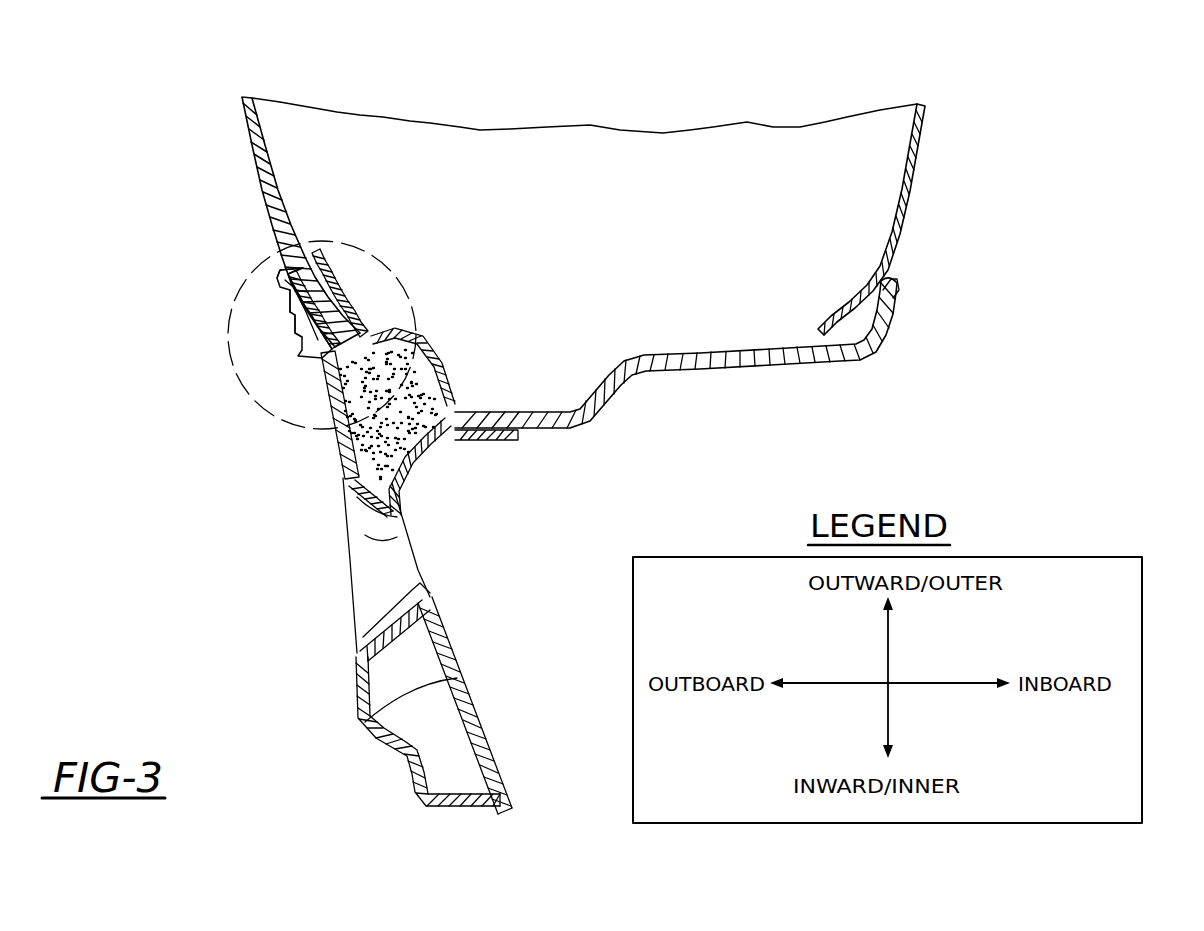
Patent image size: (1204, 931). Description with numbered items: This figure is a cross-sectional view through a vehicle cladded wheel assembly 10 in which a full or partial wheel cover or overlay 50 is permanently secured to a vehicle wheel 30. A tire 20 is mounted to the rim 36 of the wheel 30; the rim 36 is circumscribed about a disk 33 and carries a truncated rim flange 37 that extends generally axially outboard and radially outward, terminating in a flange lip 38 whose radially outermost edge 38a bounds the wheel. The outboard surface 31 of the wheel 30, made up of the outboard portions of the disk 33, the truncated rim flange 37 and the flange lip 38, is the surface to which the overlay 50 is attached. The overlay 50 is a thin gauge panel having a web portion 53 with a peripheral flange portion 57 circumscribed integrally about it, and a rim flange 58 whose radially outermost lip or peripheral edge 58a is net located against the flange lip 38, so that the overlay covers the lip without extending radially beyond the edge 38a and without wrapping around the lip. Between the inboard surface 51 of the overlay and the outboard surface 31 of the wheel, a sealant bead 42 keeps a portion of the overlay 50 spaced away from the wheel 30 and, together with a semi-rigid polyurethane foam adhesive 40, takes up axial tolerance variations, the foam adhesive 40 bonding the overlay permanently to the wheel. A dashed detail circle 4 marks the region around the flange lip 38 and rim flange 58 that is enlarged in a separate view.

The vehicle window assembly 10 is at (158, 288).
The tire 20 is at (240, 125).
The vehicle wheel 30 is at (540, 439).
The outboard surface 31 is at (347, 487).
The disk 33 is at (418, 462).
The rim 36 is at (625, 375).
The truncated rim flange 37 is at (357, 335).
The flange lip 38 is at (275, 280).
The radially outermost edge 38a is at (312, 275).
The foam adhesive 40 is at (357, 387).
The sealant bead 42 is at (293, 305).
The overlay 50 is at (330, 522).
The inboard surface 51 is at (362, 470).
The web portion 53 is at (345, 440).
The peripheral flange portion 57 is at (300, 336).
The rim flange 58 is at (278, 284).
The peripheral edge 58a is at (277, 273).
The detail circle FIG. 4 is at (203, 232).